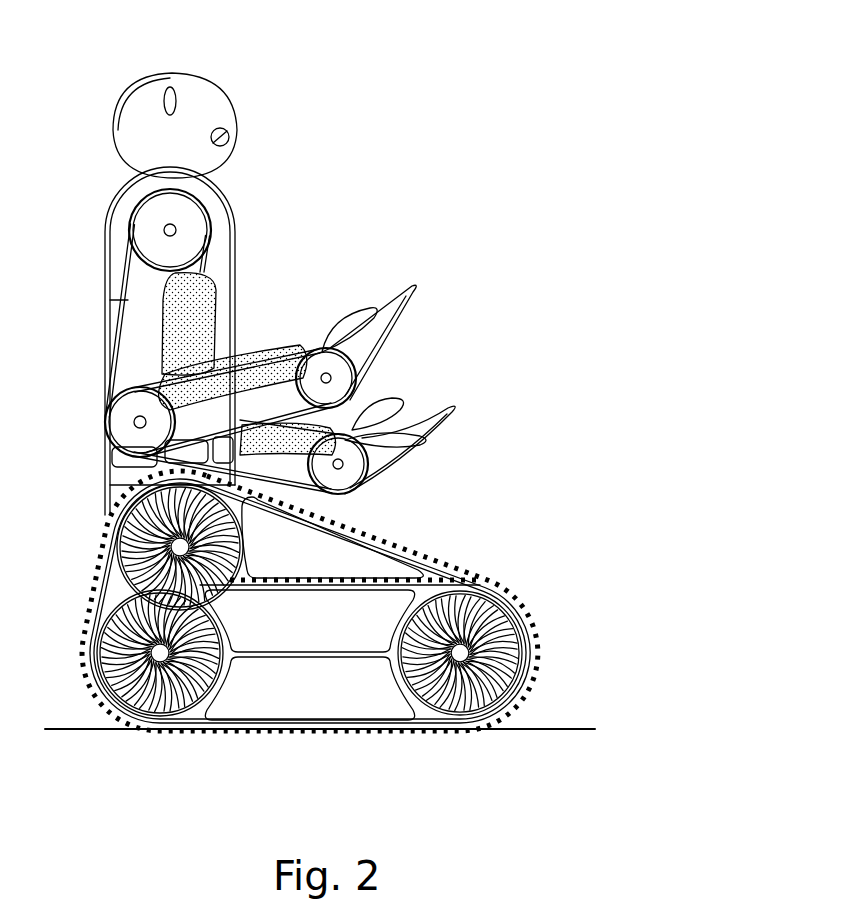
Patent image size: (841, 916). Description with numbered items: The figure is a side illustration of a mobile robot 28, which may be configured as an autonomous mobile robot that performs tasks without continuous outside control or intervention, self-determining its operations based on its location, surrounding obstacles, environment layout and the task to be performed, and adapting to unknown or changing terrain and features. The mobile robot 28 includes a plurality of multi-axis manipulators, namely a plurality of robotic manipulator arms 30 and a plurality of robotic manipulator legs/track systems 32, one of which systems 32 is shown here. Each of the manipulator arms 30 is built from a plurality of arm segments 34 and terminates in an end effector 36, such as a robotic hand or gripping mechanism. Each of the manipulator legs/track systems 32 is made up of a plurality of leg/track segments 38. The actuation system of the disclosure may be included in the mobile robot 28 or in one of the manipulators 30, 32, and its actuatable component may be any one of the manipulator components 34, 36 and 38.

The mobile robot 28 is at (427, 98).
The robotic manipulator arm 30 is at (333, 278).
The robotic manipulator leg/track system 32 is at (480, 563).
The arm segment 34 is at (108, 332).
The end effector 36 is at (355, 312).
The leg/track segment 38 is at (372, 542).